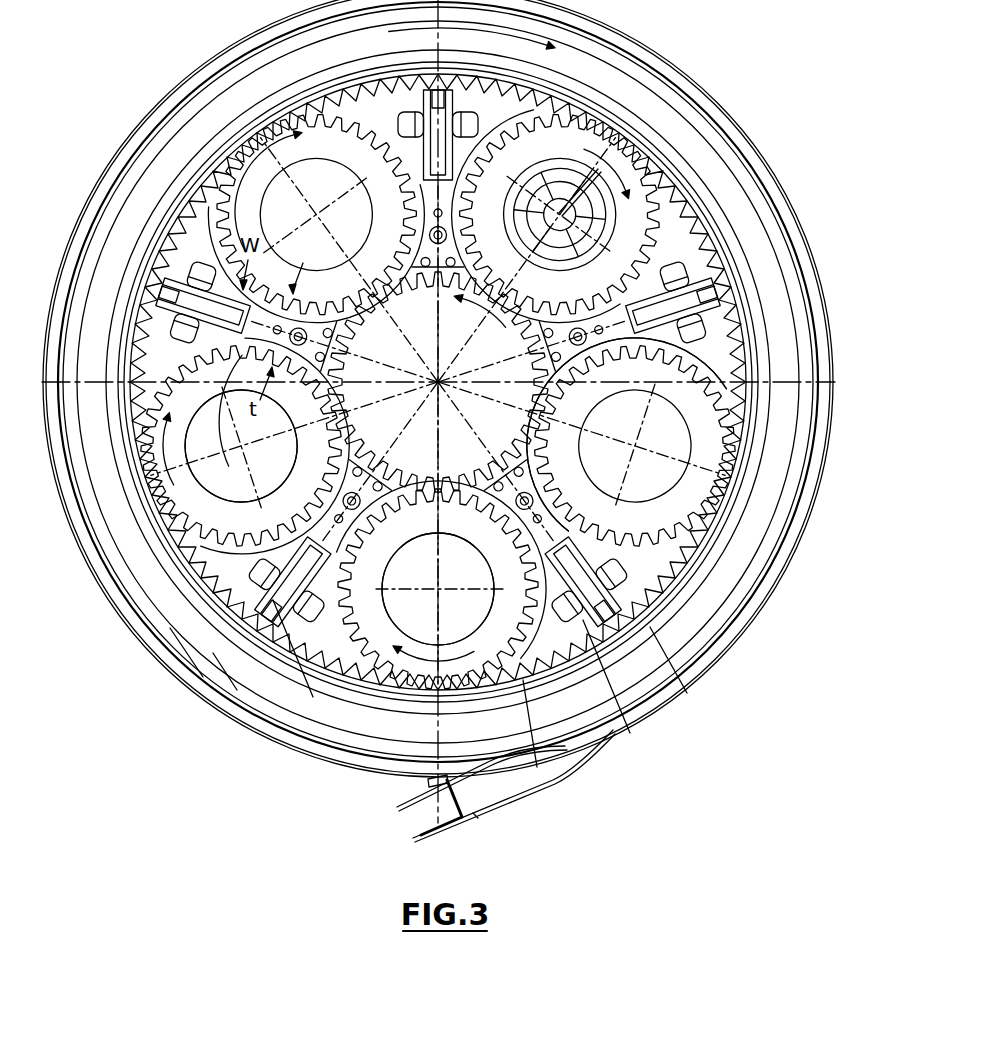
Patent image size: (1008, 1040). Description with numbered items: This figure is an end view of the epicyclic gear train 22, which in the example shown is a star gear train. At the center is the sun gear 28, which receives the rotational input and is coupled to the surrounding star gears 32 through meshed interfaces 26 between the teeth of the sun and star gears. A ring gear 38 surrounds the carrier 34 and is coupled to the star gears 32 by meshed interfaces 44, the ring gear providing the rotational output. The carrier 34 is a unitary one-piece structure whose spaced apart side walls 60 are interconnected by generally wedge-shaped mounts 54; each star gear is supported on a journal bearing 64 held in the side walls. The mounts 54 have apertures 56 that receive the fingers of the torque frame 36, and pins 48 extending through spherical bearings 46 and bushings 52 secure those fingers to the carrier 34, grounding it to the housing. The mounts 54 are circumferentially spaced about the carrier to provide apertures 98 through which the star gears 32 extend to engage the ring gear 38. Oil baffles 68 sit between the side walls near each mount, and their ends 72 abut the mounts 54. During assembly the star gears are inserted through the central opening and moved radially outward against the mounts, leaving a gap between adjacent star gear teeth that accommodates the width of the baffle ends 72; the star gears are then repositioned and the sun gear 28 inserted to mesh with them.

The epicyclic gear train 22 is at (782, 75).
The meshed interfaces 26 is at (585, 426).
The sun gear 28 is at (438, 382).
The star gears 32 is at (245, 165).
The carrier 34 is at (438, 410).
The torque frame 36 is at (596, 519).
The ring gear 38 is at (438, 361).
The meshed interfaces 44 is at (499, 382).
The spherical bearings 46 is at (147, 240).
The pins 48 is at (252, 312).
The bushings 52 is at (627, 439).
The mounts 54 is at (208, 607).
The apertures 56 is at (295, 538).
The side walls 60 is at (562, 750).
The journal bearing 64 is at (442, 535).
The oil baffles 68 is at (438, 589).
The ends 72 is at (241, 446).
The apertures 98 is at (262, 173).